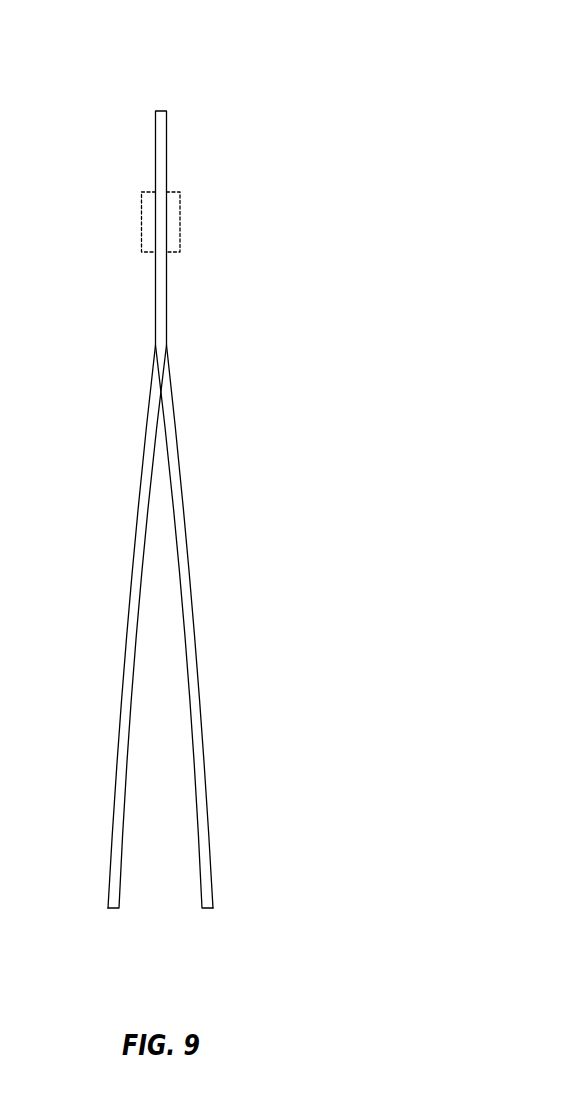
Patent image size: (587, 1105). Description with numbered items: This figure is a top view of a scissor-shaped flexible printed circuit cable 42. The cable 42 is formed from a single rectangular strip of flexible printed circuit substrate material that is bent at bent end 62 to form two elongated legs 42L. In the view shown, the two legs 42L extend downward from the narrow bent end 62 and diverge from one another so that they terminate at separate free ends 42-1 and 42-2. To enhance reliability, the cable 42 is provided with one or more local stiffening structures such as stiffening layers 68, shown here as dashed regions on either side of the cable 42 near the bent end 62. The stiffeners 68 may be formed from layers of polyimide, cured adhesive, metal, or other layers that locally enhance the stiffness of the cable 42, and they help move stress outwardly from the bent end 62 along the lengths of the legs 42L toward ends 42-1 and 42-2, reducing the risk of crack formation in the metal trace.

The bent end 62 is at (165, 86).
The stiffening layers 68 is at (141, 228).
The flexible printed circuit cable 42 is at (156, 665).
The elongated legs 42L is at (115, 770).
The end of first leg 42-1 is at (112, 916).
The end of second leg 42-2 is at (209, 916).